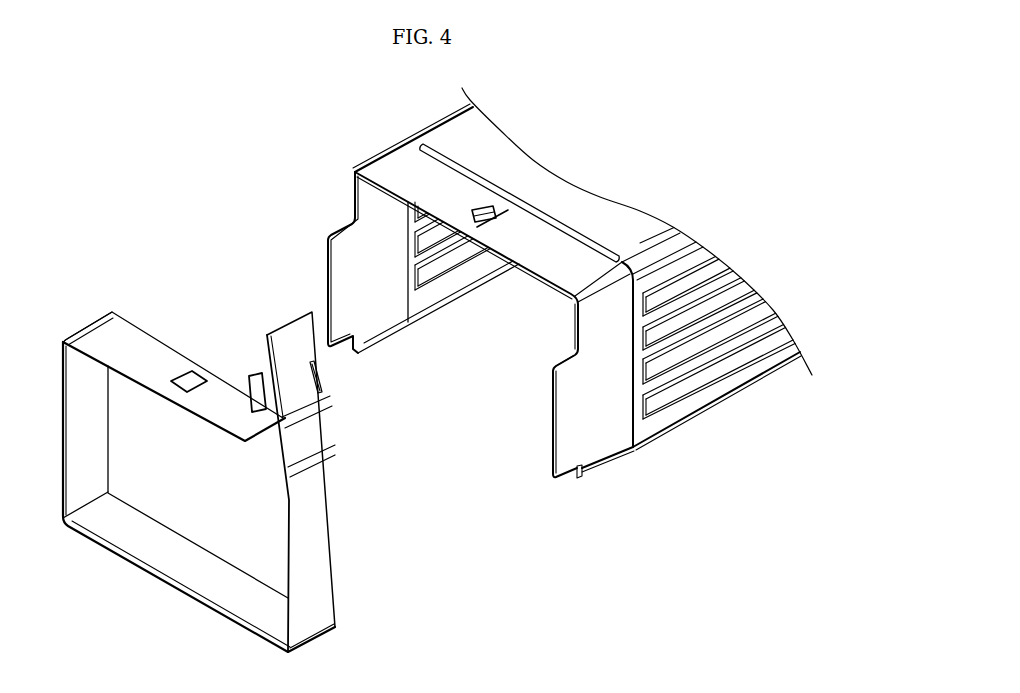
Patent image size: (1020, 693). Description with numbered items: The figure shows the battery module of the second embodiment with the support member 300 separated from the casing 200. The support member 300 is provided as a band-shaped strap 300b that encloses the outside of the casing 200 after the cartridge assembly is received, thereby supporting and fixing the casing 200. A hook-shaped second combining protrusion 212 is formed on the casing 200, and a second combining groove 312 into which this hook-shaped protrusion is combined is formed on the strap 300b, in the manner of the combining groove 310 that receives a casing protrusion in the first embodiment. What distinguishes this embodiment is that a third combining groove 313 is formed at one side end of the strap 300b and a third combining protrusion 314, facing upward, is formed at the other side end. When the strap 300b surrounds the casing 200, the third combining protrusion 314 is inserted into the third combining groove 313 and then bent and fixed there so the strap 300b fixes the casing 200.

The casing 200 is at (677, 410).
The second combining protrusion 212 is at (484, 207).
The support member 300 is at (65, 366).
The combining groove 310 is at (199, 436).
The strap 300b is at (80, 333).
The second combining groove 312 is at (186, 372).
The third combining protrusion 314 is at (250, 373).
The third combining groove 313 is at (322, 380).